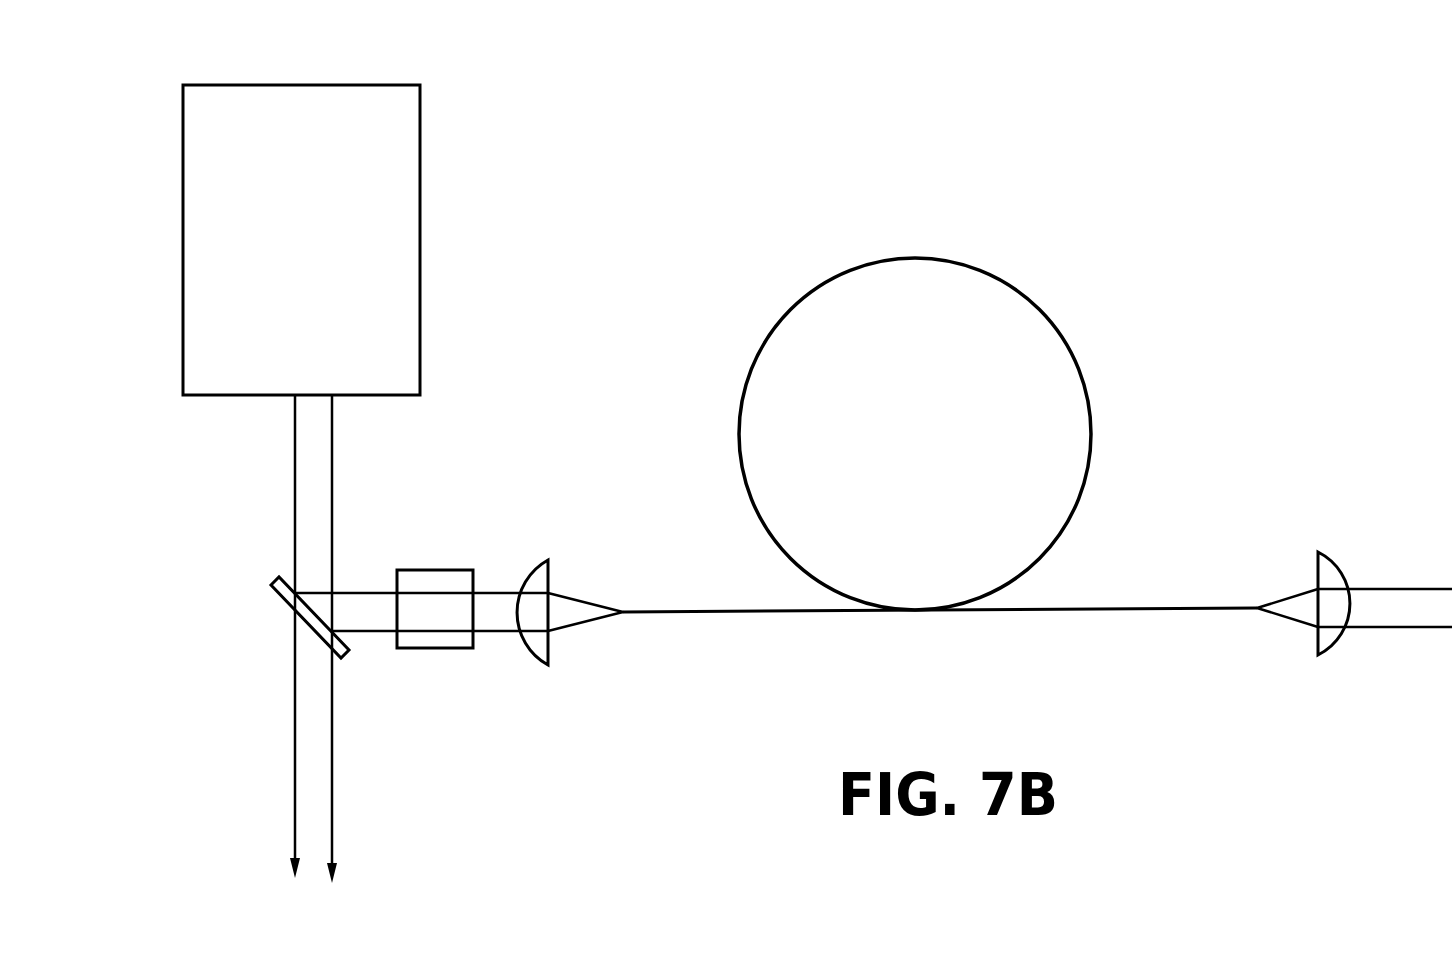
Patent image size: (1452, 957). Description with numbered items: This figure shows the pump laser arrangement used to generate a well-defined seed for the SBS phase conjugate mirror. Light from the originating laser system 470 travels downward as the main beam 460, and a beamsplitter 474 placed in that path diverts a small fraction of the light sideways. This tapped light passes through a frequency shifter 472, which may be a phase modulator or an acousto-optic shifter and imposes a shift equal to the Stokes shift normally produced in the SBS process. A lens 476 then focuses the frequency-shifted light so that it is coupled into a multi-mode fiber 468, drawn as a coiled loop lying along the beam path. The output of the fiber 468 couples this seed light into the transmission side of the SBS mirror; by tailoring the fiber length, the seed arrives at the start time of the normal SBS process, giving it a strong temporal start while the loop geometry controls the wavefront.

The originating laser system 470 is at (421, 188).
The laser beam output 460 is at (295, 792).
The beamsplitter 474 is at (270, 590).
The frequency shifter 472 is at (443, 568).
The lens 476 is at (552, 578).
The multi-mode fiber 468 is at (1091, 415).